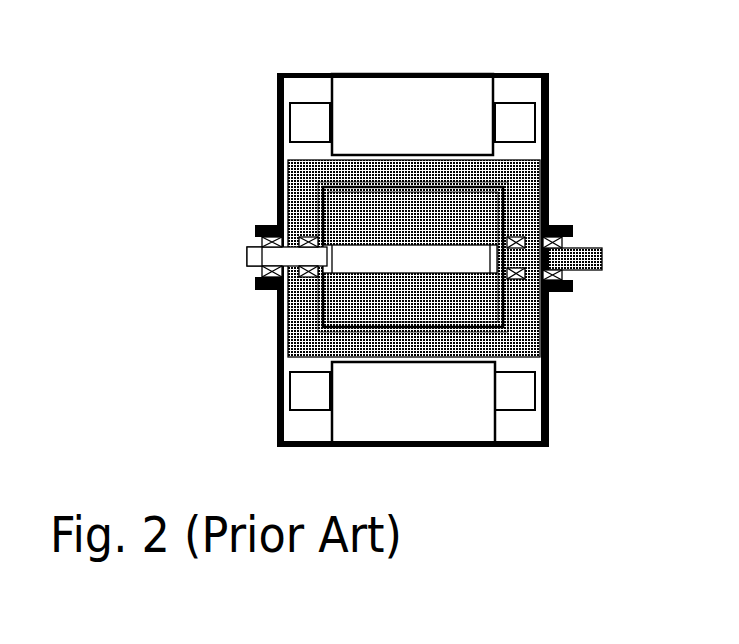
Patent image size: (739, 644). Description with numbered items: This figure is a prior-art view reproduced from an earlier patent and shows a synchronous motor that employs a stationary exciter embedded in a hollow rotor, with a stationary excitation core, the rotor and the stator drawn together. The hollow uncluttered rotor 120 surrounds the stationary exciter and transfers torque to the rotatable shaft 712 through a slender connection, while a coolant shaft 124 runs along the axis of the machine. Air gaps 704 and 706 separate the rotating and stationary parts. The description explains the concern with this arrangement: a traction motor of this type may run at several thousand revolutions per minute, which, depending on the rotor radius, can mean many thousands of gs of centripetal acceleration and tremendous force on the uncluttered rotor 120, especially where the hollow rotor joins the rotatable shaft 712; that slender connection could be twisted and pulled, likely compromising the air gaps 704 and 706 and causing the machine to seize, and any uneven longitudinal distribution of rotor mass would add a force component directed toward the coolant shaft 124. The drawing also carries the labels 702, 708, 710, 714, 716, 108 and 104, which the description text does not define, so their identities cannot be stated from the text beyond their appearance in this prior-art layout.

The stationary excitation core 702 is at (338, 185).
The air gap 704 is at (505, 298).
The air gap 706 is at (485, 328).
The housing frame 708 is at (550, 123).
The stator wound core 710 is at (435, 80).
The rotatable shaft 712 is at (583, 242).
The right bearings 714 is at (560, 222).
The left bearings 716 is at (253, 228).
The coolant shaft 124 is at (247, 247).
The shaft end 108 is at (250, 257).
The housing side wall 104 is at (277, 313).
The uncluttered rotor 120 is at (275, 350).